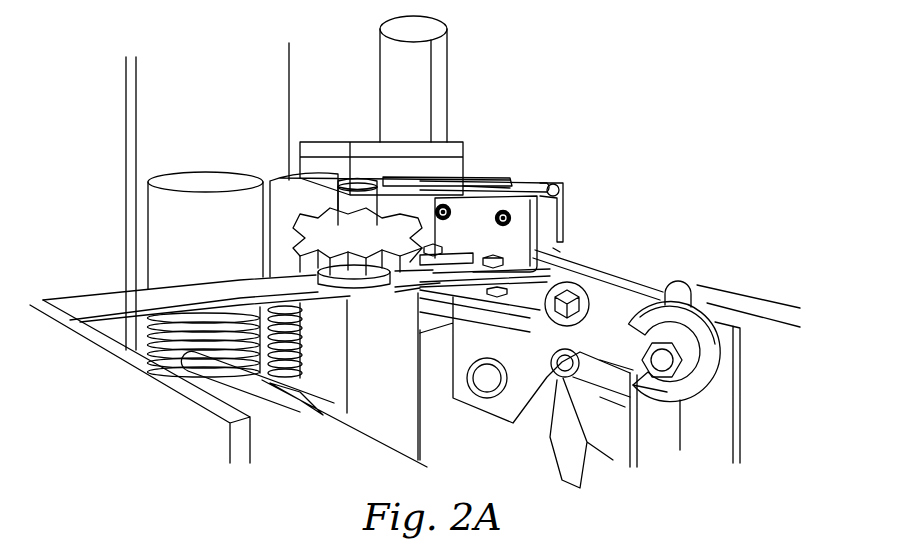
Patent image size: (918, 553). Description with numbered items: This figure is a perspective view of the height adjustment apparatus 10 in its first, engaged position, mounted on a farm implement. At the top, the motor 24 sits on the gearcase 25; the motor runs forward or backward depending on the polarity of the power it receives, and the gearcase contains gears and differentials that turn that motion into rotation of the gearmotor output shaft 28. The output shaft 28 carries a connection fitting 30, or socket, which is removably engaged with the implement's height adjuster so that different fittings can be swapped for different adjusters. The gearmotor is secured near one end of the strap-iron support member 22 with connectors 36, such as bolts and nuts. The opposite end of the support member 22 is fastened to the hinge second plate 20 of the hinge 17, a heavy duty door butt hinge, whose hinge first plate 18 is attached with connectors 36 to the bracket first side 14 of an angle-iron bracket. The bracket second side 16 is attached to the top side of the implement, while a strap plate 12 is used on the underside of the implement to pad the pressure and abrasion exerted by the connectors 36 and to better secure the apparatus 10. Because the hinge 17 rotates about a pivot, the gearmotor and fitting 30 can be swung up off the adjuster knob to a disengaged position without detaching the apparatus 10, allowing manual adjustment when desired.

The height adjustment apparatus 10 is at (580, 259).
The strap plate 12 is at (520, 304).
The bracket first side 14 is at (560, 253).
The bracket second side 16 is at (413, 278).
The hinge 17 is at (556, 183).
The hinge first plate 18 is at (564, 218).
The hinge second plate 20 is at (537, 180).
The support member 22 is at (470, 178).
The motor 24 is at (413, 79).
The gearcase 25 is at (353, 148).
The gearmotor output shaft 28 is at (280, 177).
The connection fitting 30 is at (357, 234).
The connectors 36 is at (493, 256).